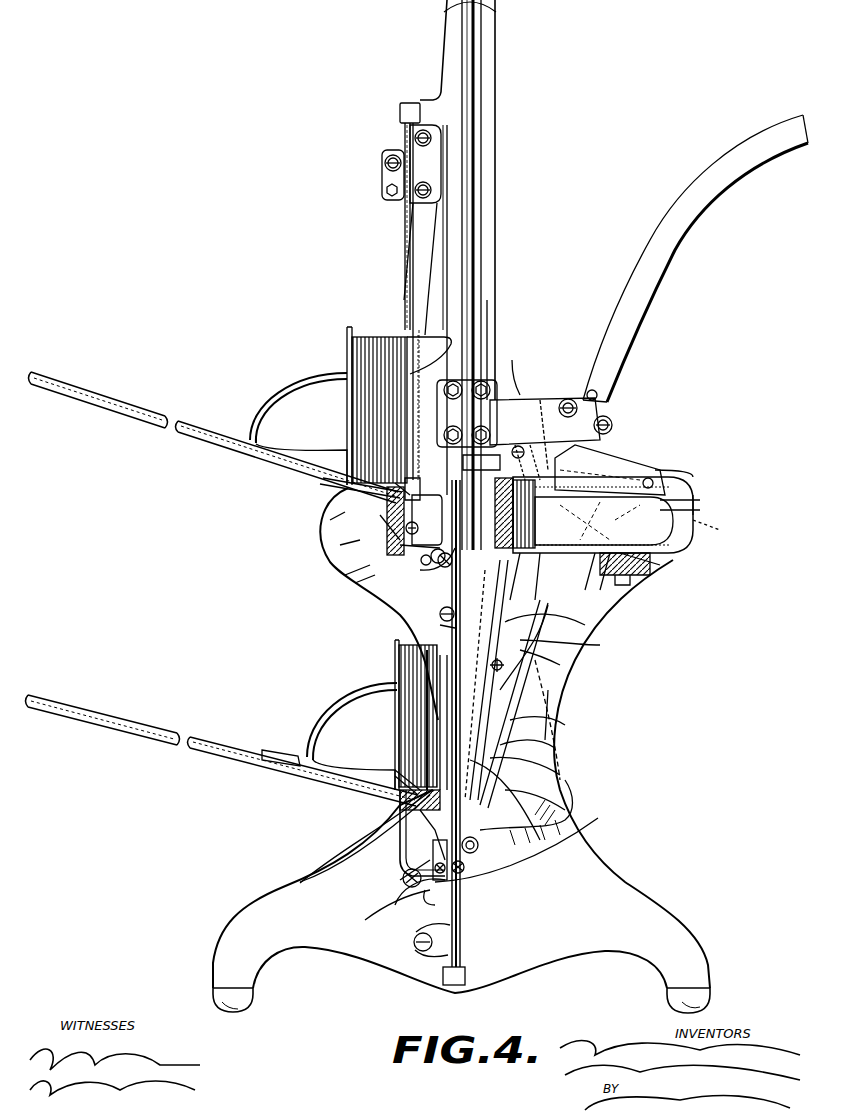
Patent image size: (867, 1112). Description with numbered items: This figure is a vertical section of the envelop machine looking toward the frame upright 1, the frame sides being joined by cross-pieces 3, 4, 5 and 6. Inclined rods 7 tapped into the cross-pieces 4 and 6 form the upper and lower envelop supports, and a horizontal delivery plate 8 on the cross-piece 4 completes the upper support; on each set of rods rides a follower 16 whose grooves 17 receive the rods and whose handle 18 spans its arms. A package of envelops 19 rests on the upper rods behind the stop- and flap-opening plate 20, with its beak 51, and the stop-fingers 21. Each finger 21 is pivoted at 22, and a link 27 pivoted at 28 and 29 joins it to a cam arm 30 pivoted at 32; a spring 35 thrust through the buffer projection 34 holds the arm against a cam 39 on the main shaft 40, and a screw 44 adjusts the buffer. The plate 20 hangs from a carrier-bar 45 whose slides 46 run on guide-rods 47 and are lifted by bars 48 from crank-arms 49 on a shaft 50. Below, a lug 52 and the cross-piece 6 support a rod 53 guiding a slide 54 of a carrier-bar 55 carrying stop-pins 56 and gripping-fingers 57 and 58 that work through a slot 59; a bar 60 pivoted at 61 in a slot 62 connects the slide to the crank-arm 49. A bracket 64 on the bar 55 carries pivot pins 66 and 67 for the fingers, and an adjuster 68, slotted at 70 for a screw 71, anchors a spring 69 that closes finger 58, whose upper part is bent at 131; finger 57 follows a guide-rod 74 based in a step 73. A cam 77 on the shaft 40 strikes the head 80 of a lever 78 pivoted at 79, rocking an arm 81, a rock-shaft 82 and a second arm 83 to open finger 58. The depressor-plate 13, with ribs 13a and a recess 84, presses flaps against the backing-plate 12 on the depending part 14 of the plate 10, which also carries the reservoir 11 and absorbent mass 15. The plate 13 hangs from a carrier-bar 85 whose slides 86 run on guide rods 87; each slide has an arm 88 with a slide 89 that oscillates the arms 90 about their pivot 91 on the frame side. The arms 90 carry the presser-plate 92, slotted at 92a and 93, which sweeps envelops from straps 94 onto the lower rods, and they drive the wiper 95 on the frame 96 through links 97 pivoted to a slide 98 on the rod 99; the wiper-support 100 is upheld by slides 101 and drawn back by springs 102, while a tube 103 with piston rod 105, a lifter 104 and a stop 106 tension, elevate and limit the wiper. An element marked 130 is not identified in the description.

The frame side or upright 1 is at (562, 650).
The cross-piece 3 is at (456, 6).
The cross-piece 4 is at (378, 519).
The cross-piece 5 is at (660, 565).
The cross-piece 6 is at (400, 775).
The inclined rods 7 is at (185, 420).
The horizontal delivery plate 8 is at (340, 500).
The horizontal plate 10 is at (640, 578).
The water-tank or reservoir 11 is at (690, 536).
The vertical backing-plate 12 is at (480, 685).
The depressor-plate 13 is at (455, 462).
The vertical ribs 13a is at (608, 641).
The depending part 14 is at (489, 680).
The absorbent mass 15 is at (605, 556).
The follower 16 is at (275, 462).
The grooves 17 is at (347, 360).
The handle 18 is at (300, 380).
The envelops 19 is at (372, 345).
The stop- and flap-opening plate 20 is at (411, 289).
The stop-finger 21 is at (398, 478).
The pivot 22 is at (330, 521).
The link 27 is at (387, 508).
The pivot 28 is at (410, 484).
The pivot 29 is at (404, 536).
The cam arm 30 is at (395, 548).
The pivot 32 is at (429, 520).
The buffer projection 34 is at (349, 587).
The spring 35 is at (345, 575).
The cam 39 is at (431, 559).
The main shaft 40 is at (400, 573).
The screw 44 is at (340, 546).
The carrier-bar 45 is at (416, 152).
The slide 46 is at (384, 180).
The guide-rod 47 is at (404, 222).
The bar 48 is at (402, 236).
The crank-arm 49 is at (519, 458).
The shaft 50 is at (420, 620).
The flap-opening beak 51 is at (438, 335).
The lug 52 is at (468, 977).
The rod 53 is at (464, 931).
The slide 54 is at (500, 862).
The carrier-bar 55 is at (410, 847).
The stop-pins 56 is at (418, 727).
The gripping-finger 57 is at (545, 746).
The gripping-finger 58 is at (575, 726).
The slot 59 is at (398, 800).
The bar 60 is at (558, 764).
The pivot 61 is at (540, 555).
The slot 62 is at (552, 688).
The bracket 64 is at (412, 862).
The pivot pin 66 is at (435, 869).
The pivot pin 67 is at (462, 868).
The tension regulator or adjuster 68 is at (394, 887).
The spring 69 is at (401, 822).
The slot 70 is at (400, 896).
The screw 71 is at (400, 880).
The step 73 is at (566, 820).
The guide-rod 74 is at (560, 793).
The cam 77 is at (442, 567).
The operating lever 78 is at (440, 613).
The pivot 79 is at (450, 629).
The head 80 is at (420, 570).
The oscillating arm 81 is at (385, 744).
The rock-shaft 82 is at (412, 890).
The second oscillating arm 83 is at (376, 826).
The central recess 84 is at (486, 660).
The carrier-bar 85 is at (520, 393).
The slide 86 is at (483, 300).
The vertical guide rod 87 is at (470, 228).
The rearwardly-extending arm 88 is at (520, 404).
The slide 89 is at (605, 418).
The arms 90 is at (656, 268).
The screw 91 is at (414, 942).
The presser-plate 92 is at (600, 705).
The slot 92a is at (572, 715).
The slot 93 is at (565, 638).
The straps 94 is at (372, 795).
The wiper 95 is at (561, 405).
The reciprocating and oscillating frame 96 is at (642, 476).
The link 97 is at (700, 553).
The slide 98 is at (668, 478).
The horizontal rod 99 is at (694, 505).
The wiper-support 100 is at (465, 456).
The slide 101 is at (520, 385).
The spring 102 is at (585, 508).
The tube 103 is at (560, 663).
The lifter 104 is at (592, 476).
The rod 105 is at (622, 588).
The stop 106 is at (556, 395).
The rod 130 is at (414, 470).
The backward bend 131 is at (332, 690).